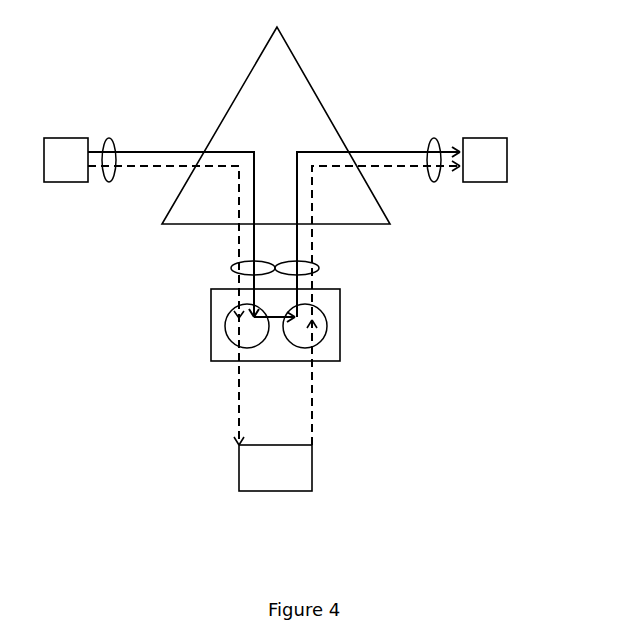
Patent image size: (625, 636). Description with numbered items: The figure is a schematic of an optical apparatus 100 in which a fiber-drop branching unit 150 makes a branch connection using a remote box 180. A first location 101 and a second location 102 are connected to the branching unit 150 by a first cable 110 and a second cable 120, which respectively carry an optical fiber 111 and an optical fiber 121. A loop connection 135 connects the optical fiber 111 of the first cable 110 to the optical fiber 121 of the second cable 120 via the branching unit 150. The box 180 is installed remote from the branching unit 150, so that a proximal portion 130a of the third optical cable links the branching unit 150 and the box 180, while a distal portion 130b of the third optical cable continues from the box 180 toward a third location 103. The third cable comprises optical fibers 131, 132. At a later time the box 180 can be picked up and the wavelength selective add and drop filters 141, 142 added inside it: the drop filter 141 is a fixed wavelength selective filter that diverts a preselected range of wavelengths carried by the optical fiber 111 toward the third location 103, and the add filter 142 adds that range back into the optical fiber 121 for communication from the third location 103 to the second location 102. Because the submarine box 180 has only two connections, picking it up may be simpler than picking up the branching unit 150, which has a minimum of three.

The optical apparatus 100 is at (401, 91).
The first location 101 is at (58, 182).
The second location 102 is at (507, 168).
The third location 103 is at (297, 492).
The first cable 110 is at (148, 135).
The optical fiber 111 is at (108, 138).
The second cable 120 is at (362, 118).
The optical fiber 121 is at (435, 178).
The proximal portion of the third optical cable 130a is at (223, 240).
The distal portion of the third optical cable 130b is at (223, 407).
The optical fiber 131 is at (233, 268).
The optical fiber 132 is at (318, 267).
The loop connection 135 is at (275, 320).
The drop filter 141 is at (226, 325).
The add filter 142 is at (327, 323).
The branching unit 150 is at (243, 88).
The box 180 is at (340, 335).